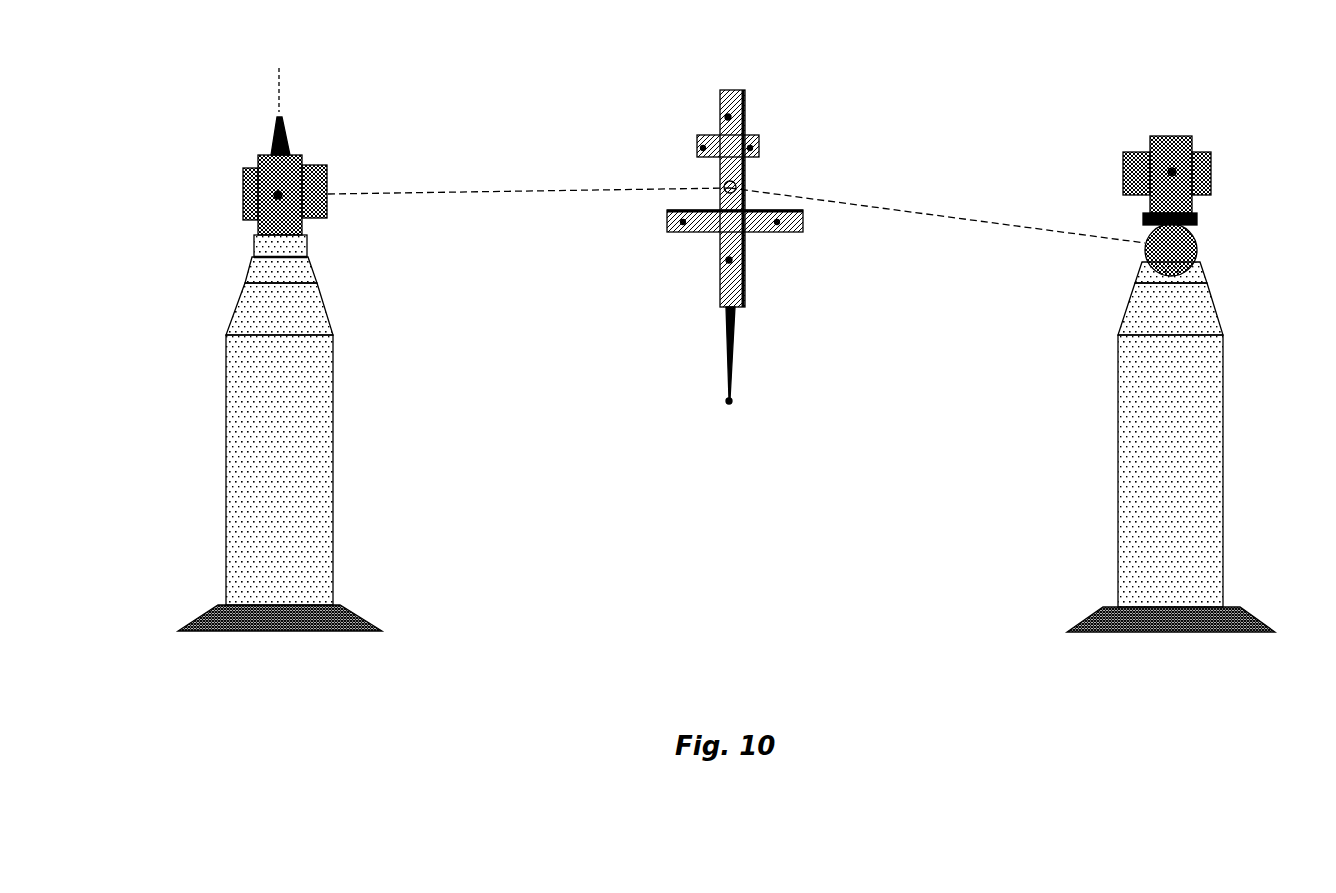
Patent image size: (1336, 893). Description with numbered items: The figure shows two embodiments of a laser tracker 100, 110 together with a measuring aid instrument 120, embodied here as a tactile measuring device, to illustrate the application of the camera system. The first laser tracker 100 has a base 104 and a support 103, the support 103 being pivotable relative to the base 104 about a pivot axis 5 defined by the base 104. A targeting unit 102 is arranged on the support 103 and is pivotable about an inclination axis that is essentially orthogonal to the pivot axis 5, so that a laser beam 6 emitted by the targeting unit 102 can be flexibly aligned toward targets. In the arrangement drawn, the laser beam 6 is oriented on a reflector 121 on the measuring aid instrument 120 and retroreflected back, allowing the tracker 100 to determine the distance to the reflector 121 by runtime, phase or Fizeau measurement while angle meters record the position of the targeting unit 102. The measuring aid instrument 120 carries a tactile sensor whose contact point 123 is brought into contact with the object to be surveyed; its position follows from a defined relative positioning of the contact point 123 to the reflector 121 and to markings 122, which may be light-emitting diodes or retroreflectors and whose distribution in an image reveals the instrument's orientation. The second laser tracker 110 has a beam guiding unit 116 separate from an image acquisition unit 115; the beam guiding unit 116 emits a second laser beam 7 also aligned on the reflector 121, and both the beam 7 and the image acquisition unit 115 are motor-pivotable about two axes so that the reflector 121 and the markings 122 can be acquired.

The first laser tracker 100 is at (246, 75).
The pivot axis 5 is at (281, 90).
The targeting unit 102 is at (248, 172).
The support 103 is at (287, 162).
The base 104 is at (264, 245).
The laser beam 6 is at (590, 189).
The second laser beam 7 is at (1003, 226).
The measuring aid instrument 120 is at (716, 64).
The reflector 121 is at (741, 186).
The markings 122 is at (729, 115).
The contact point 123 is at (732, 397).
The second laser tracker 110 is at (1150, 98).
The image acquisition unit 115 is at (1204, 150).
The beam guiding unit 116 is at (1194, 240).